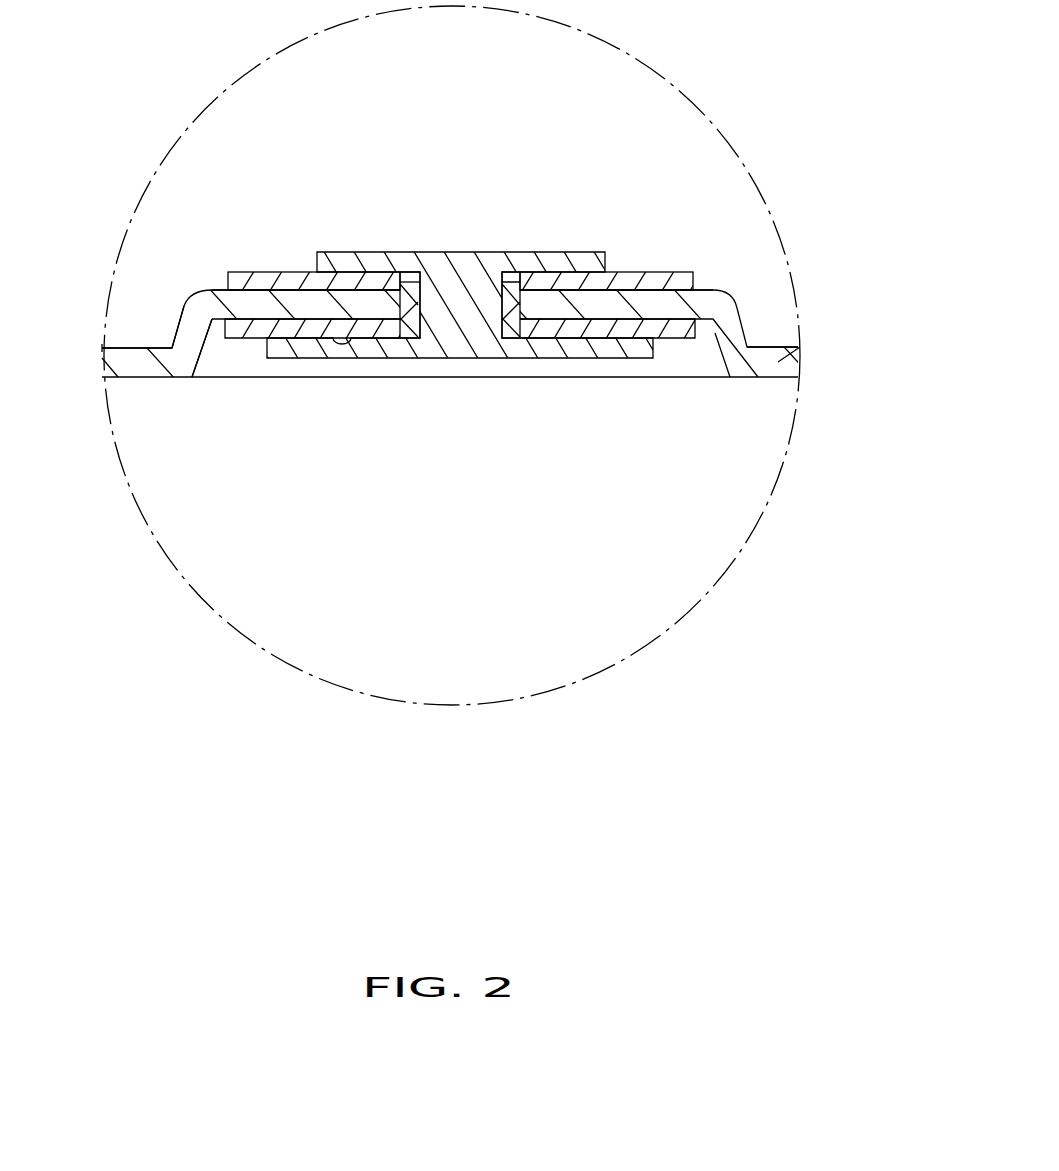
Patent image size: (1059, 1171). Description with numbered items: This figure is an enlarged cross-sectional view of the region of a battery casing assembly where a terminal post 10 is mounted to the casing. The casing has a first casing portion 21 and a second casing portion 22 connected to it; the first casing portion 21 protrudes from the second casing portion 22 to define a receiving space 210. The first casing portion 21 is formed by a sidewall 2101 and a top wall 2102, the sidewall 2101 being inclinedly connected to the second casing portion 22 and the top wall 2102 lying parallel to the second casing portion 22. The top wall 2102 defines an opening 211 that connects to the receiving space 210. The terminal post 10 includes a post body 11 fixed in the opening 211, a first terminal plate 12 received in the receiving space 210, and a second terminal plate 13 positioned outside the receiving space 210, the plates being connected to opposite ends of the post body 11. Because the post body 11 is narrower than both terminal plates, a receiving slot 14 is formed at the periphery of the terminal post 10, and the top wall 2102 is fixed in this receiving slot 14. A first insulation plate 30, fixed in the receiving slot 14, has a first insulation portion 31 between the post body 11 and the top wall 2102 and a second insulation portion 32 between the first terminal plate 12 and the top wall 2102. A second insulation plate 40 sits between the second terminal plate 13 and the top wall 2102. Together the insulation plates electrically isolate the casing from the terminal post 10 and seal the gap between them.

The terminal post 10 is at (481, 187).
The post body 11 is at (462, 302).
The first terminal plate 12 is at (582, 348).
The second terminal plate 13 is at (555, 258).
The receiving slot 14 is at (507, 313).
The first casing portion 21 is at (883, 222).
The sidewall 2101 is at (730, 328).
The top wall 2102 is at (655, 302).
The receiving space 210 is at (217, 348).
The opening 211 is at (398, 297).
The second casing portion 22 is at (793, 349).
The first insulation plate 30 is at (366, 392).
The first insulation portion 31 is at (407, 312).
The second insulation portion 32 is at (312, 330).
The second insulation plate 40 is at (263, 282).